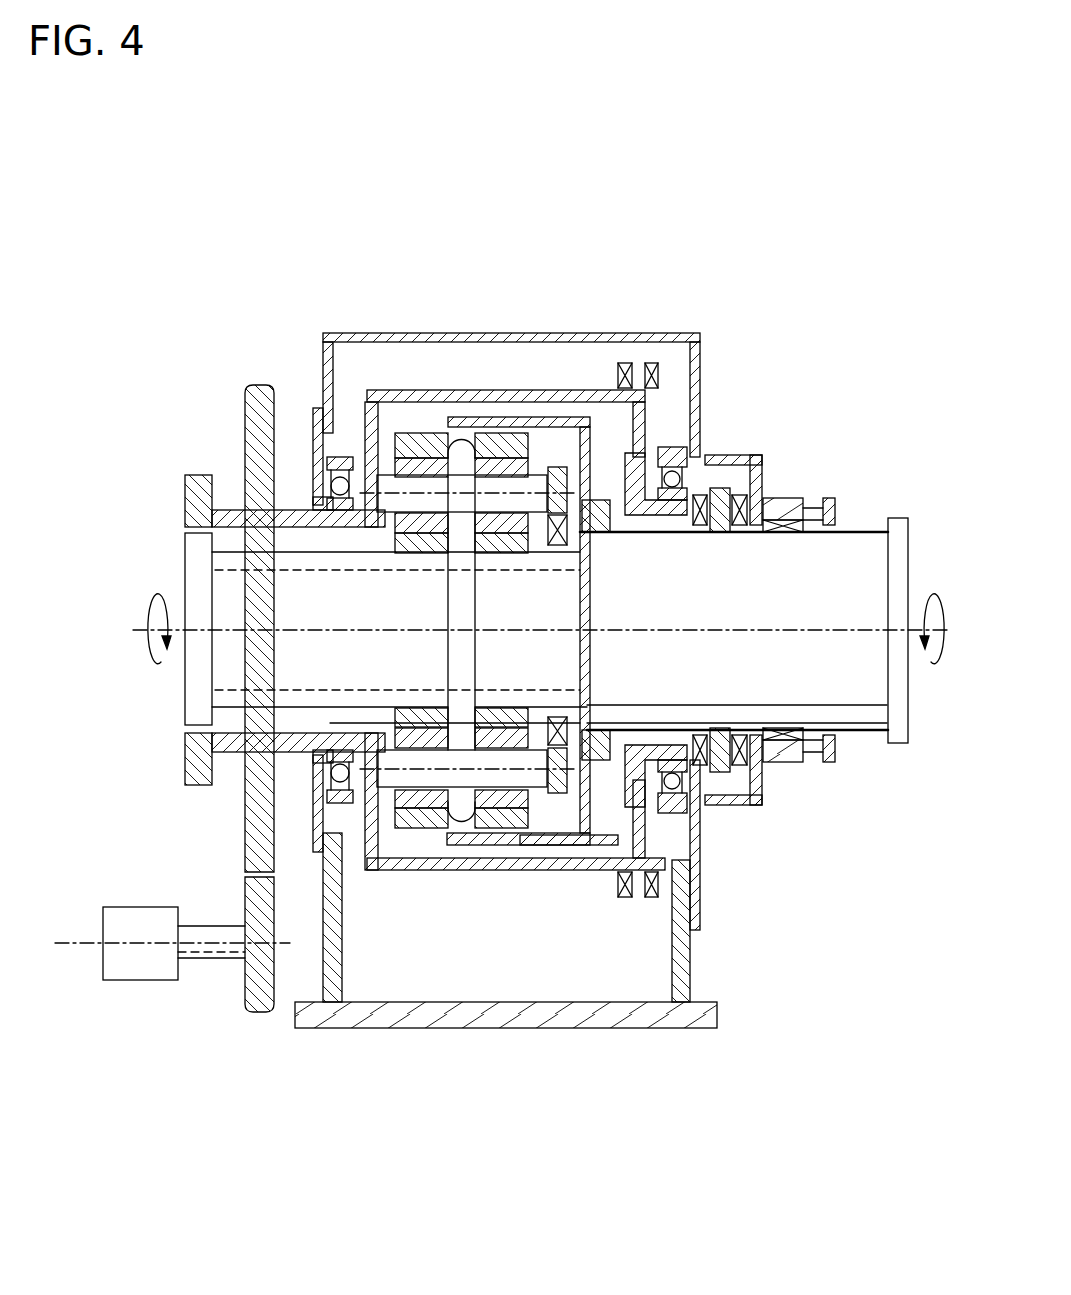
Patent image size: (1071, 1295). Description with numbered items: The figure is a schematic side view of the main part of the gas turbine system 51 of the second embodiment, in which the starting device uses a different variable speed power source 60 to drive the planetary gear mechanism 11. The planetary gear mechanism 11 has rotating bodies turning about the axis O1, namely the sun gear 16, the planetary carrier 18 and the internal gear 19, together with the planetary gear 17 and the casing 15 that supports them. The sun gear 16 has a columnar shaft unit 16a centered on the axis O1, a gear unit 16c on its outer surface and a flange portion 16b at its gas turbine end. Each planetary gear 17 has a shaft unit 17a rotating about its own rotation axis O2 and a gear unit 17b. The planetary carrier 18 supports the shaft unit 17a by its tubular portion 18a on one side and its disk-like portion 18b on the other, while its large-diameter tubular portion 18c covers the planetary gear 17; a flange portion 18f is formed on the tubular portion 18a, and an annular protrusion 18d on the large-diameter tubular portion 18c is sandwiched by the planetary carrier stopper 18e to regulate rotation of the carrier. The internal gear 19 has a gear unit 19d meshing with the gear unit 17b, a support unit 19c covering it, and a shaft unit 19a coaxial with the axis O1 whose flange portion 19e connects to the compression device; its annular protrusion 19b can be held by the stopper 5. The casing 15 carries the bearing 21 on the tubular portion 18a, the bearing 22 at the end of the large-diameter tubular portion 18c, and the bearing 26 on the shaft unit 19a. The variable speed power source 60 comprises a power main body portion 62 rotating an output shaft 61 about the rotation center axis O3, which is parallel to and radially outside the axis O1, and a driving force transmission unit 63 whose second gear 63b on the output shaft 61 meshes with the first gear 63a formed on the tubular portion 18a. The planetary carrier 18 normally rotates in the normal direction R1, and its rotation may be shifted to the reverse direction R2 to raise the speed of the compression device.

The stopper 5 is at (714, 492).
The planetary gear mechanism 11 is at (770, 900).
The casing 15 is at (623, 363).
The sun gear 16 is at (326, 717).
The shaft unit 16a is at (238, 682).
The flange portion 16b is at (195, 715).
The gear unit 16c is at (493, 553).
The planetary gear 17 is at (479, 616).
The shaft unit 17a is at (395, 462).
The gear unit 17b is at (440, 462).
The planetary carrier 18 is at (420, 526).
The tubular portion 18a is at (227, 508).
The disk-like portion 18b is at (600, 398).
The large-diameter tubular portion 18c is at (317, 408).
The annular protrusion 18d is at (553, 468).
The planetary carrier stopper 18e is at (690, 445).
The flange portion 18f is at (200, 477).
The internal gear 19 is at (642, 512).
The shaft unit 19a is at (850, 545).
The annular protrusion 19b is at (757, 455).
The support unit 19c is at (650, 462).
The gear unit 19d is at (690, 470).
The flange portion 19e is at (898, 540).
The bearing 21 is at (340, 790).
The bearing 22 is at (703, 462).
The bearing 26 is at (800, 755).
The gas turbine system 51 is at (822, 1026).
The variable speed power source 60 is at (201, 781).
The output shaft 61 is at (210, 960).
The power main body portion 62 is at (140, 975).
The driving force transmission unit 63 is at (259, 758).
The first gear 63a is at (239, 979).
The second gear 63b is at (273, 847).
The axis O1 is at (853, 632).
The rotation axis O2 is at (578, 520).
The rotation center axis O3 is at (93, 945).
The normal direction R1 is at (157, 595).
The reverse direction R2 is at (940, 593).